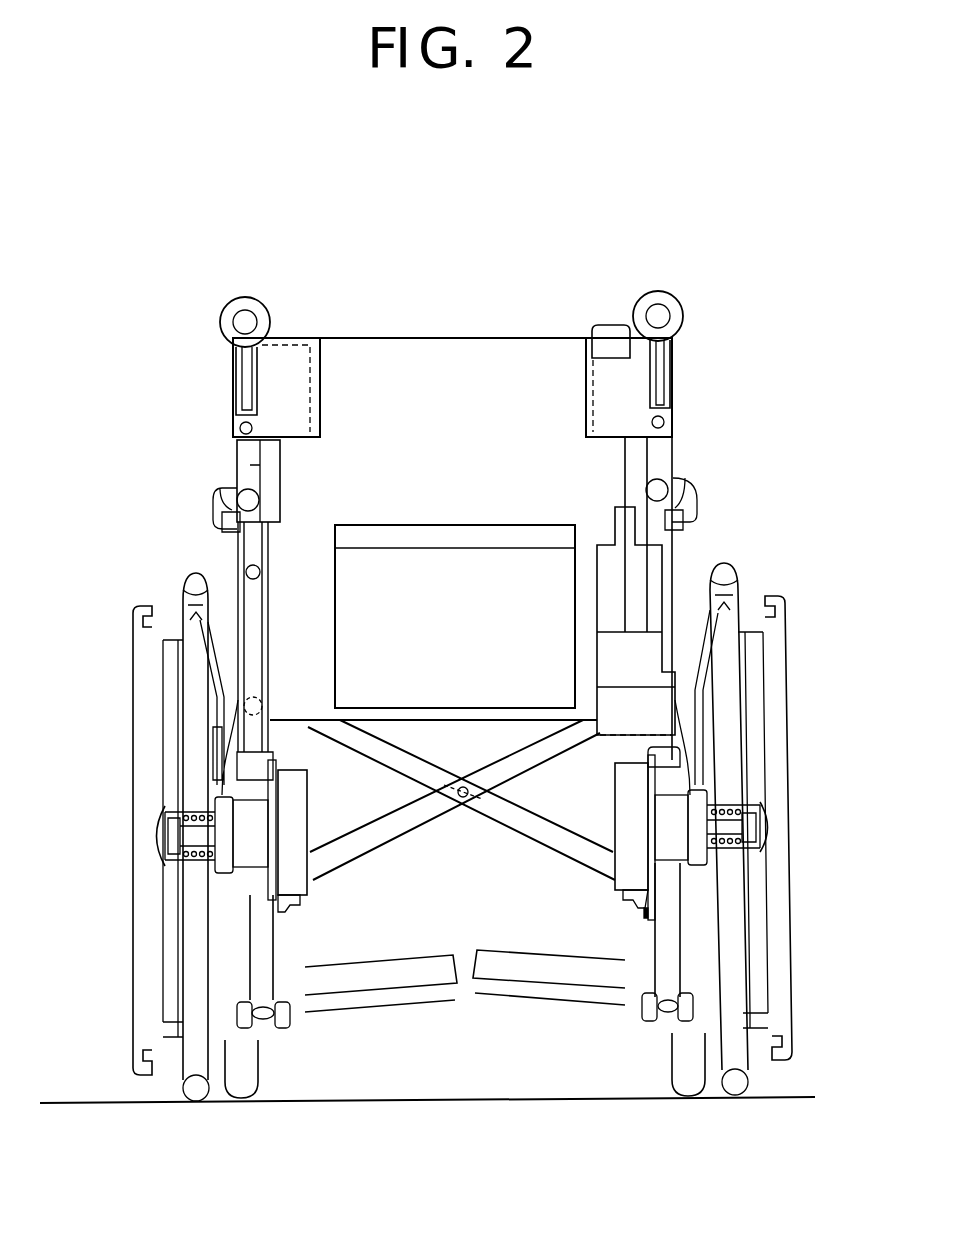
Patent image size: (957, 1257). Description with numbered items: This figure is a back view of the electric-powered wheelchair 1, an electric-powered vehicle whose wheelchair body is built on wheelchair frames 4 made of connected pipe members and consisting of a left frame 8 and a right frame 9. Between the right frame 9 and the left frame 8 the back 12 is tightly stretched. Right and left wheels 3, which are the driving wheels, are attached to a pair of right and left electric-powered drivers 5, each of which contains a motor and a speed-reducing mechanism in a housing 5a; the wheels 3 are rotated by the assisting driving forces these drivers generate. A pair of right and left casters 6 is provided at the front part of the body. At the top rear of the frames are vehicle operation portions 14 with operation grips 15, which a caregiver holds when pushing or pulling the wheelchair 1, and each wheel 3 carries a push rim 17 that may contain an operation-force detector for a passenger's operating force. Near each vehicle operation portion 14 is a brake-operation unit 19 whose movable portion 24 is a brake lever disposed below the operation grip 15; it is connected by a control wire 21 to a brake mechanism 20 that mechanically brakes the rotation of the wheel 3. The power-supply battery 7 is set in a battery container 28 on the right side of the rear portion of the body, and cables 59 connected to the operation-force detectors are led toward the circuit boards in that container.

The electric-powered wheelchair 1 is at (520, 300).
The wheel 3 is at (183, 580).
The wheelchair frame 4 is at (495, 277).
The electric-powered driver 5 is at (328, 889).
The housing 5a is at (295, 889).
The caster 6 is at (246, 1067).
The power-supply battery 7 is at (648, 588).
The left frame 8 is at (256, 467).
The right frame 9 is at (636, 482).
The back 12 is at (298, 540).
The vehicle operation portion 14 is at (250, 295).
The operation grip 15 is at (244, 321).
The push rim 17 is at (133, 613).
The brake-operation unit 19 is at (212, 384).
The brake mechanism 20 is at (225, 886).
The control wire 21 is at (242, 575).
The movable portion 24 is at (246, 404).
The battery container 28 is at (608, 837).
The cable 59 is at (612, 326).